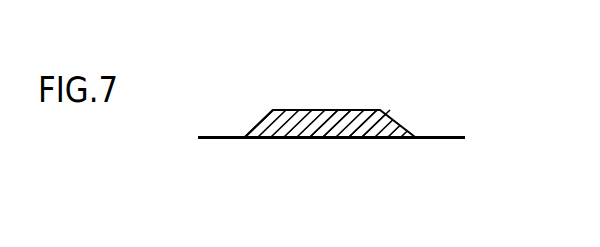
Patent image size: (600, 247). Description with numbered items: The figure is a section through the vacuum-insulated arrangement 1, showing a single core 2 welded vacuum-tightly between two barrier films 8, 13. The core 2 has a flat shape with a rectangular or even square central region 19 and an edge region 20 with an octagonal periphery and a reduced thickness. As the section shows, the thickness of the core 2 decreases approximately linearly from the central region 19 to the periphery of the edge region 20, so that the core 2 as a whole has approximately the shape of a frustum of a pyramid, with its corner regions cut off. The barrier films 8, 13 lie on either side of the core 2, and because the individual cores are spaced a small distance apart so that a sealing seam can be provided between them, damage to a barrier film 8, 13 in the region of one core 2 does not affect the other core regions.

The semiconductor device 1 is at (424, 112).
The core 2 is at (295, 111).
The barrier film 8 is at (328, 141).
The barrier film 13 is at (325, 111).
The central region 19 is at (363, 111).
The edge region 20 is at (253, 110).